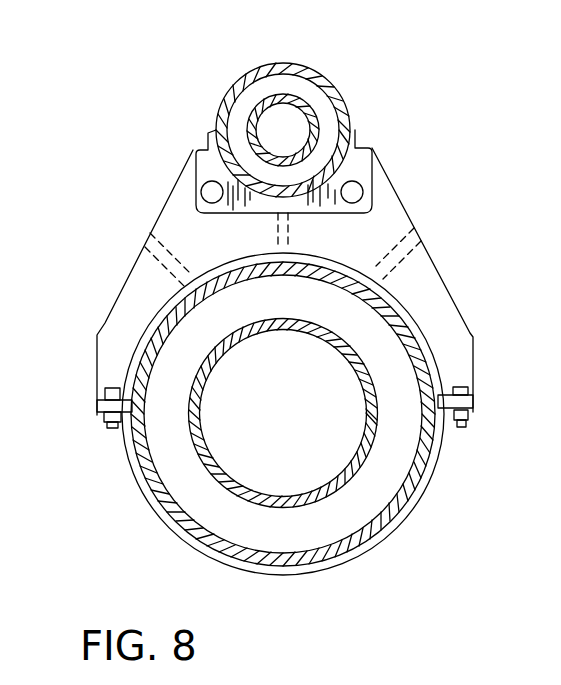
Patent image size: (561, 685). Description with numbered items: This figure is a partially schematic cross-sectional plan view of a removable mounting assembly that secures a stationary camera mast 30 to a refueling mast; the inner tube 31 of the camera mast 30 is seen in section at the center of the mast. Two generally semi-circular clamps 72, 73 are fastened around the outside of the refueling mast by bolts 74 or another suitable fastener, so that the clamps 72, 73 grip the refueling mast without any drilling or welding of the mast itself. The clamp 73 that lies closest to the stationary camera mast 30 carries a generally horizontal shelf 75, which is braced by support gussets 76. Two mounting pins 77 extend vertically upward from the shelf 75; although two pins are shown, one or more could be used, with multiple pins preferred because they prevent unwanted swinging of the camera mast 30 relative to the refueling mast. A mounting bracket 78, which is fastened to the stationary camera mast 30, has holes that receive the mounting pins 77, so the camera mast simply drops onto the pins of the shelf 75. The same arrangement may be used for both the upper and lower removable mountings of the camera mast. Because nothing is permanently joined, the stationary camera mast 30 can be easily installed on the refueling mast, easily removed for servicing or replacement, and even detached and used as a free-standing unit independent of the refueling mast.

The stationary camera mast 30 is at (238, 82).
The inner tube 31 is at (287, 97).
The semi-circular clamp 72 is at (148, 493).
The semi-circular clamp 73 is at (132, 347).
The bolts 74 is at (113, 428).
The shelf 75 is at (387, 227).
The support gussets 76 is at (278, 223).
The mounting pins 77 is at (207, 193).
The mounting bracket 78 is at (353, 165).